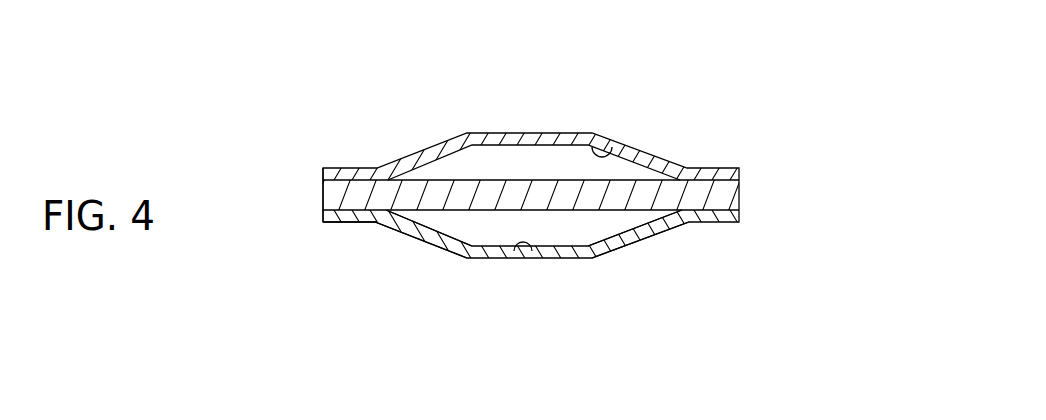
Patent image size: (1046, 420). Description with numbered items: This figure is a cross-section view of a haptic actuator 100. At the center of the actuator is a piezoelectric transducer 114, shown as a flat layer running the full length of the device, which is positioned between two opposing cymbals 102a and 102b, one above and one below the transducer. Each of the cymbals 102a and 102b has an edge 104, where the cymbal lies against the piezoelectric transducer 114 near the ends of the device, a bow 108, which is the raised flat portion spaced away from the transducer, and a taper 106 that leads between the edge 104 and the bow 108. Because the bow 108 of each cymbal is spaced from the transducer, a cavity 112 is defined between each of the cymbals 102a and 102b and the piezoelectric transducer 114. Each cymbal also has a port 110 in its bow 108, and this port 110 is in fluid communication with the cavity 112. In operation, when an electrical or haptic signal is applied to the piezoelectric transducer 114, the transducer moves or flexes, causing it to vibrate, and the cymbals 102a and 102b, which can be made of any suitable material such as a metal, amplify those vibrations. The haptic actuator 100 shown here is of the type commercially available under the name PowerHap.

The haptic actuator 100 is at (741, 193).
The cymbal 102a is at (728, 167).
The cymbal 102b is at (723, 224).
The edge 104 is at (353, 224).
The taper 106 is at (433, 245).
The bow 108 is at (580, 260).
The port 110 is at (530, 259).
The cavity 112 is at (610, 152).
The piezoelectric transducer 114 is at (322, 196).